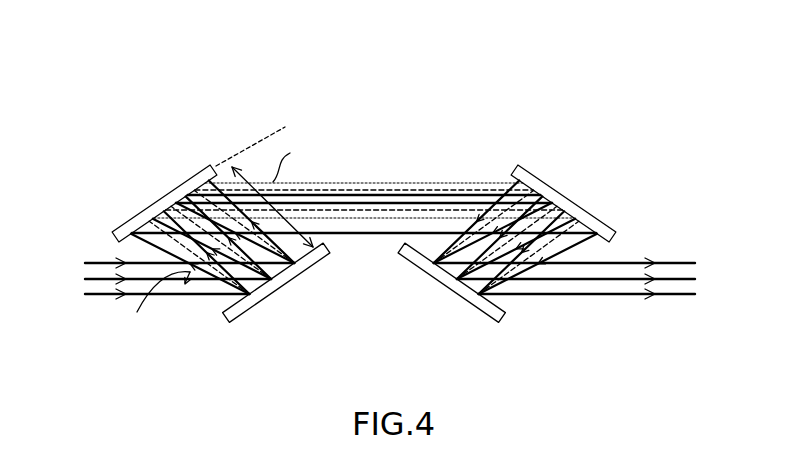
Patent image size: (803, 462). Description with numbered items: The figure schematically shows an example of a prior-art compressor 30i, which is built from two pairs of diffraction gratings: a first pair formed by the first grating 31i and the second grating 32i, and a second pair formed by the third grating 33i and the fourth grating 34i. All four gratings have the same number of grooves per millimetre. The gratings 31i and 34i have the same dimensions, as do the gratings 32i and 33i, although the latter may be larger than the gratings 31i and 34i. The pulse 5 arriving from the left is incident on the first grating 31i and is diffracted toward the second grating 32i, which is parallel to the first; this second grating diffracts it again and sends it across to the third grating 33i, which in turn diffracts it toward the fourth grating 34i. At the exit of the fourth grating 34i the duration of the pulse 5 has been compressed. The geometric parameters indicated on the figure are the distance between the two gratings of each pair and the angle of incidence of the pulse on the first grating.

The compressor 30i is at (128, 118).
The first grating 31i is at (272, 300).
The second grating 32i is at (140, 212).
The third grating 33i is at (552, 190).
The fourth grating 34i is at (433, 280).
The pulse 5 is at (82, 252).